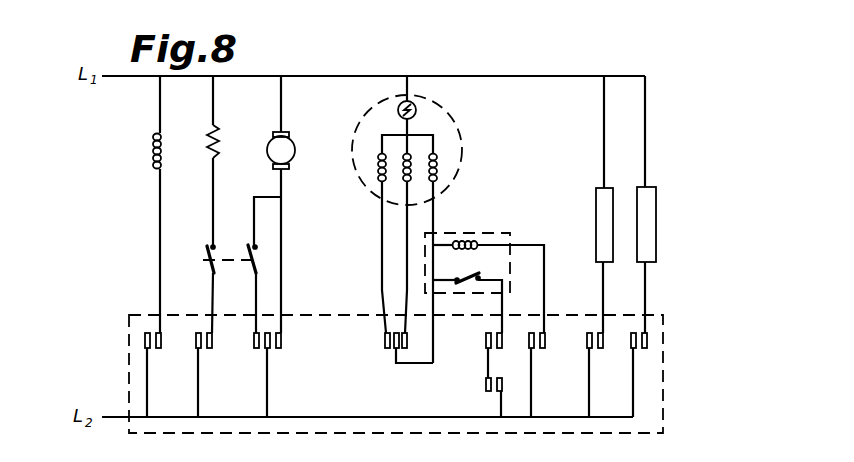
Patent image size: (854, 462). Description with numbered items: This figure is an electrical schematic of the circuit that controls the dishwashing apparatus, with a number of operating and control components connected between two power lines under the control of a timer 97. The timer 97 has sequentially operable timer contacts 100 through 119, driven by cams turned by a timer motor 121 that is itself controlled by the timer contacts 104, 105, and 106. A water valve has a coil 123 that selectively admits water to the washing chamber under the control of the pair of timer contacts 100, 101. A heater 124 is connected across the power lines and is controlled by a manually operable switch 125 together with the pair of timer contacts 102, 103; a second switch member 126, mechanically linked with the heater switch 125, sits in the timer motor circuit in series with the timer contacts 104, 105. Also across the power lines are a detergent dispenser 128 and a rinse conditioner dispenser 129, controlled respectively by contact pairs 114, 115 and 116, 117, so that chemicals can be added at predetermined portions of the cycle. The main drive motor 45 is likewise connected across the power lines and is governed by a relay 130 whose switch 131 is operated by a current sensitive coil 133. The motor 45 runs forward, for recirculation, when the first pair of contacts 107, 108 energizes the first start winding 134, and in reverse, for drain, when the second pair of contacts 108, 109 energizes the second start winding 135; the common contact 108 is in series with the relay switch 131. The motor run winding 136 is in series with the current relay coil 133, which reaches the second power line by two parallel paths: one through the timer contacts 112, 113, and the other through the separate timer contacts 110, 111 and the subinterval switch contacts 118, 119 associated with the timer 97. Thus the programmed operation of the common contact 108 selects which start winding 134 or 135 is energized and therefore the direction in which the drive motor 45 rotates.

The main drive motor 45 is at (454, 113).
The timer 97 is at (129, 315).
The timer contact 100 is at (143, 340).
The timer contact 101 is at (159, 350).
The timer contact 102 is at (199, 333).
The timer contact 103 is at (210, 350).
The timer contact 104 is at (257, 333).
The timer contact 105 is at (268, 350).
The timer contact 106 is at (283, 344).
The timer contact 107 is at (385, 335).
The common contact 108 is at (393, 350).
The timer contact 109 is at (406, 350).
The timer contact 110 is at (486, 341).
The timer contact 111 is at (492, 350).
The timer contact 112 is at (531, 339).
The timer contact 113 is at (542, 350).
The timer contact 114 is at (589, 340).
The timer contact 115 is at (600, 350).
The timer contact 116 is at (634, 333).
The timer contact 117 is at (648, 345).
The subinterval switch contact 118 is at (486, 384).
The subinterval switch contact 119 is at (498, 391).
The timer motor 121 is at (290, 160).
The water valve coil 123 is at (152, 165).
The heater 124 is at (217, 137).
The manually operable switch 125 is at (207, 245).
The second switch member 126 is at (252, 254).
The detergent dispenser 128 is at (596, 197).
The rinse conditioner dispenser 129 is at (656, 222).
The relay 130 is at (504, 233).
The relay switch 131 is at (468, 276).
The current sensitive coil 133 is at (461, 237).
The first start winding 134 is at (379, 158).
The second start winding 135 is at (410, 157).
The motor run winding 136 is at (437, 161).